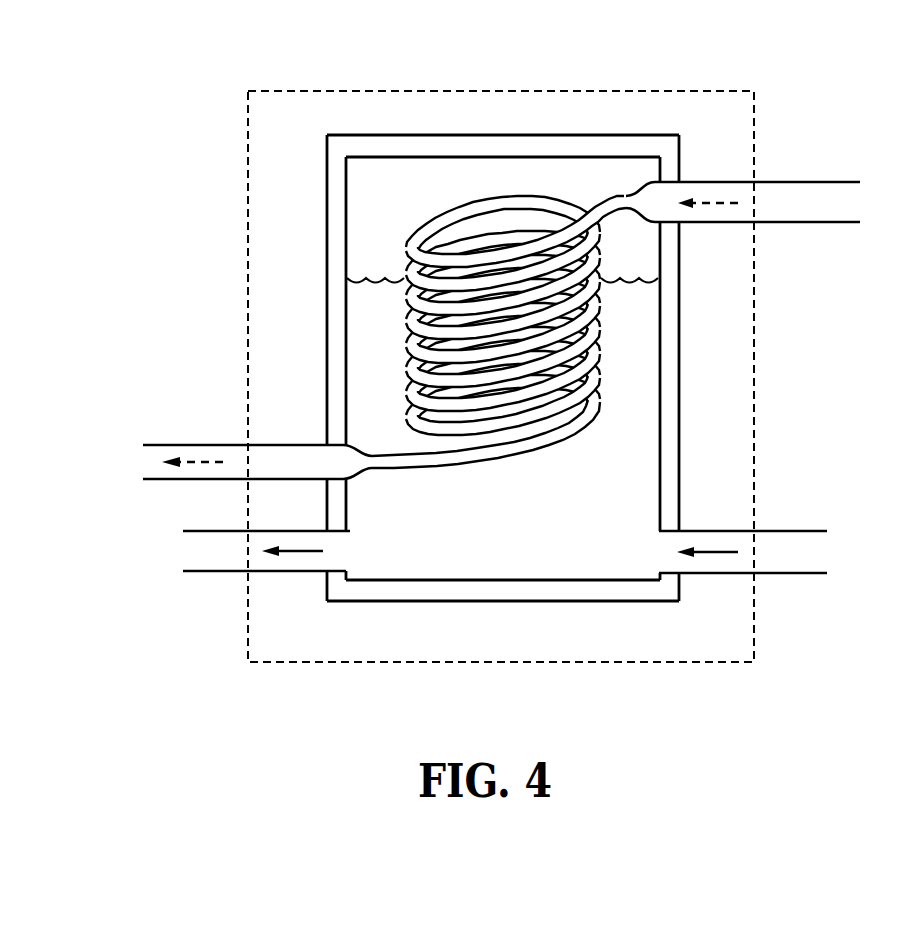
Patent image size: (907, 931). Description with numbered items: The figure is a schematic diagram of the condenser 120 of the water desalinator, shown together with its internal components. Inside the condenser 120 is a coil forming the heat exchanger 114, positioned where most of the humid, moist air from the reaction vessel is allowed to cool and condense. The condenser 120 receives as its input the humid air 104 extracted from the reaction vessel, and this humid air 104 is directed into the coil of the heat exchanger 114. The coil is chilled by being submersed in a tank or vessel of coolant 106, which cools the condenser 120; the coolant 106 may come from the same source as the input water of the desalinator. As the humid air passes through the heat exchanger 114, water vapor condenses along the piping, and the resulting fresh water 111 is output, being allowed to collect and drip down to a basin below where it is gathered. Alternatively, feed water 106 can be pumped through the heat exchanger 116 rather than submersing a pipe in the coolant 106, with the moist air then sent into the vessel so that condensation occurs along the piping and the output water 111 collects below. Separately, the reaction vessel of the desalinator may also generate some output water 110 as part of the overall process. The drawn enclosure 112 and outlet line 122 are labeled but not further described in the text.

The output water 110 is at (150, 78).
The condenser 120 is at (370, 91).
The tank 112 is at (612, 135).
The heat exchanger 114 is at (420, 226).
The humid air 104 is at (743, 203).
The fresh water 111 is at (190, 444).
The coolant 106 is at (502, 552).
The heat exchanger 116 is at (808, 530).
The coolant outlet 122 is at (202, 574).